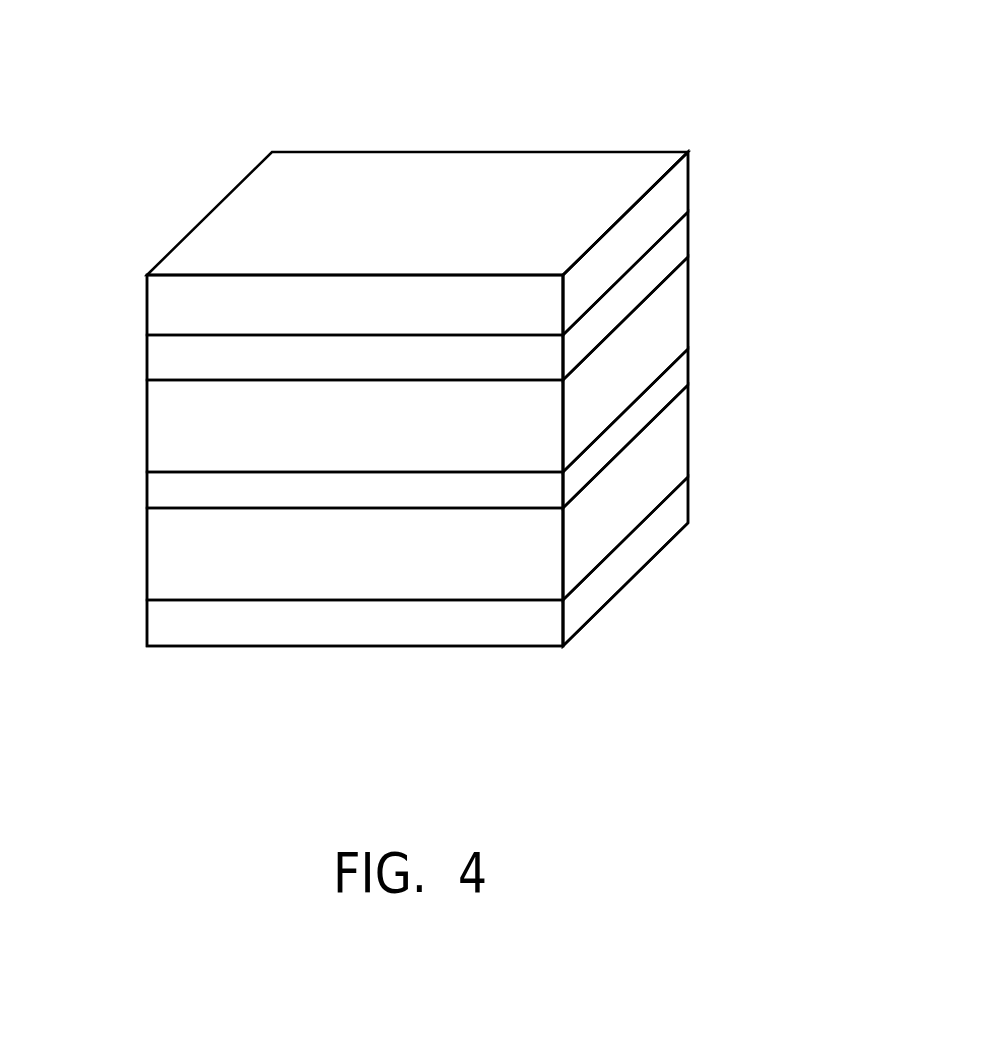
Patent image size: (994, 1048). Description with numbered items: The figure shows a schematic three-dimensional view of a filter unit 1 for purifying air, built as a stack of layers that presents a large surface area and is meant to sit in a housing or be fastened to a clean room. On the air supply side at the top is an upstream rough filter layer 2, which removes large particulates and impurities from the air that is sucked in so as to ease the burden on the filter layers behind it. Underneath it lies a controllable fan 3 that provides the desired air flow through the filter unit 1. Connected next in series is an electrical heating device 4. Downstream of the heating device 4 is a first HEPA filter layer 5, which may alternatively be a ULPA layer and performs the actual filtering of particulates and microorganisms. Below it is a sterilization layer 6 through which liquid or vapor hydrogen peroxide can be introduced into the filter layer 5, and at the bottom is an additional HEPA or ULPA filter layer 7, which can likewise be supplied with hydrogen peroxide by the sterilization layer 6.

The filter unit 1 is at (417, 324).
The upstream rough filter layer 2 is at (666, 199).
The controllable fan 3 is at (182, 358).
The electrical heating device 4 is at (666, 323).
The first HEPA filter layer 5 is at (183, 497).
The sterilization layer 6 is at (668, 449).
The additional HEPA or ULPA filter layer 7 is at (183, 623).